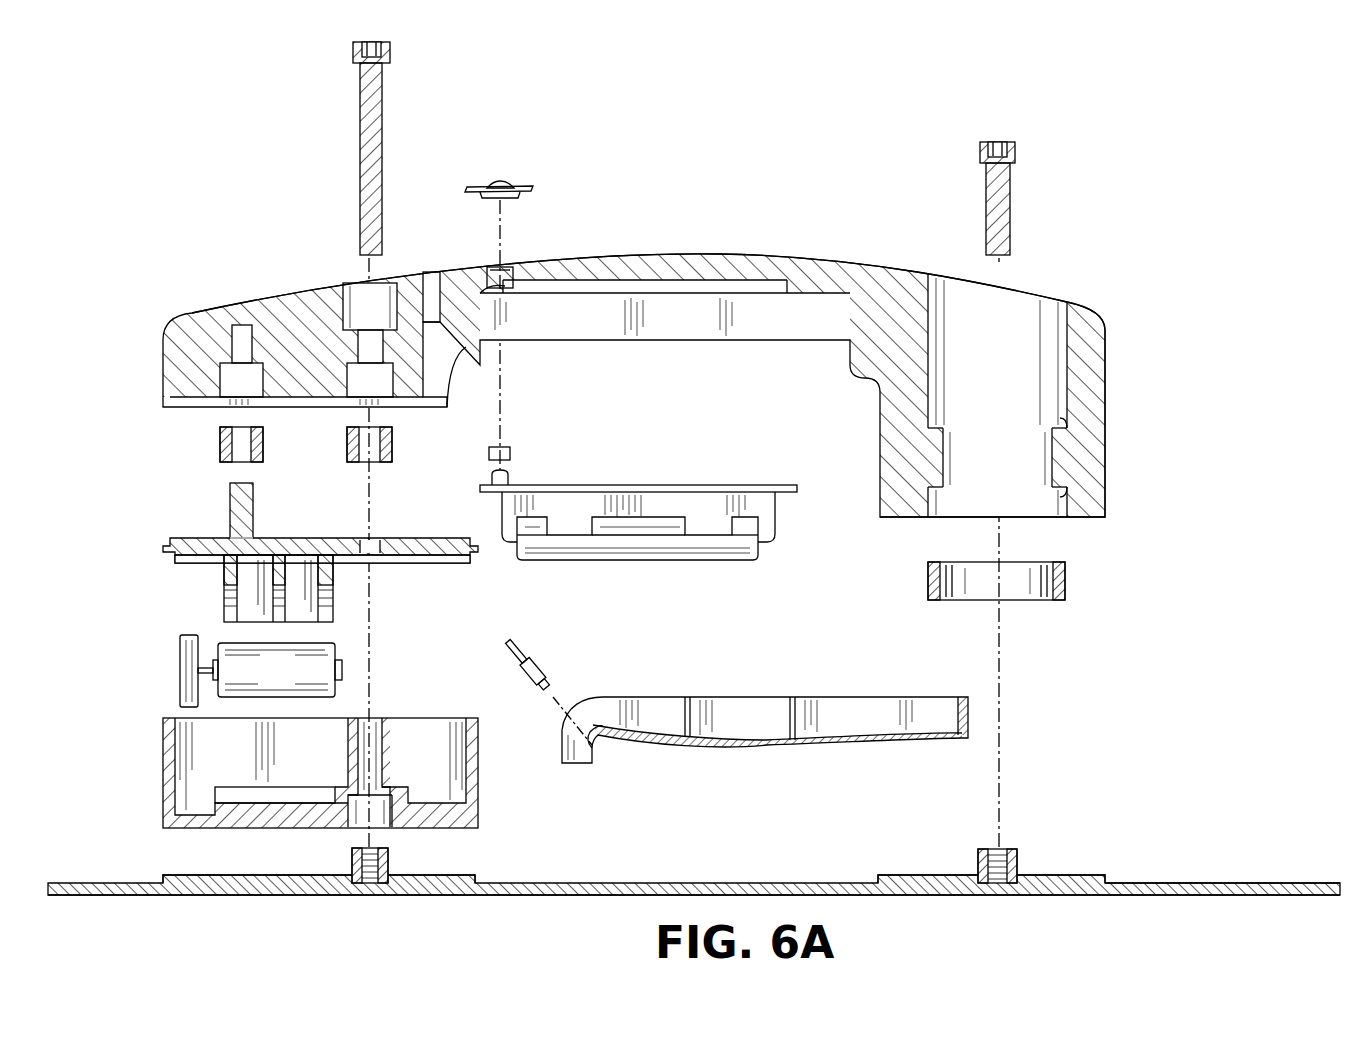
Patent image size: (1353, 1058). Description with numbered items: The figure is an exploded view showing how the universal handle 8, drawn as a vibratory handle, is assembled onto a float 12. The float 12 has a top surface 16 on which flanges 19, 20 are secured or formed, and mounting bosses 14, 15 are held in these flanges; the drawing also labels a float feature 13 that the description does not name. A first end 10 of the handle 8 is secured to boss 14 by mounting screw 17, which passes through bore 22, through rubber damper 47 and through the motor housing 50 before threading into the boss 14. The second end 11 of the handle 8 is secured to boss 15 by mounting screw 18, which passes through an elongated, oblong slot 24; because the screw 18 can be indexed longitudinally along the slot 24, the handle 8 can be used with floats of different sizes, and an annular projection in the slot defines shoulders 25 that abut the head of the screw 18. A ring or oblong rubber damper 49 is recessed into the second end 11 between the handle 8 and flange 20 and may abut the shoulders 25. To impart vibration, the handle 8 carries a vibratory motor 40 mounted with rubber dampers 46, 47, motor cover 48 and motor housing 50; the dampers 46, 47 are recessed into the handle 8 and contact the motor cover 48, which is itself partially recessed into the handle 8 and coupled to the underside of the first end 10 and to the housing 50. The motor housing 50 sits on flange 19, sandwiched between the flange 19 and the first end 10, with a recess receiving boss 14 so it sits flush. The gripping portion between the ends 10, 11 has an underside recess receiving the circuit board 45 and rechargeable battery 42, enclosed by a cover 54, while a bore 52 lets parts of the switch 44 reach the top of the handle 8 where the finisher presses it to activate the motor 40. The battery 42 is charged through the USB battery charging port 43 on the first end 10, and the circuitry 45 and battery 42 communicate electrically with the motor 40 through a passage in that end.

The universal handle 8 is at (639, 226).
The first end 10 is at (165, 300).
The second end 11 is at (1104, 300).
The float 12 is at (1302, 883).
The bottom surface of base plate 13 is at (1168, 897).
The mounting boss 14 is at (352, 860).
The mounting boss 15 is at (1017, 862).
The top surface 16 is at (1220, 882).
The mounting screw 17 is at (360, 158).
The mounting screw 18 is at (986, 195).
The flange 19 is at (478, 877).
The flange 20 is at (1108, 878).
The bore 22 is at (352, 283).
The elongated slot 24 is at (1060, 300).
The shoulders 25 is at (1062, 421).
The vibratory motor 40 is at (298, 678).
The rechargeable battery 42 is at (655, 561).
The USB battery charging port 43 is at (537, 692).
The switch 44 is at (500, 181).
The circuit board 45 is at (661, 485).
The rubber damper 46 is at (220, 446).
The rubber damper 47 is at (347, 446).
The motor cover 48 is at (183, 538).
The rubber damper 49 is at (928, 580).
The motor housing 50 is at (163, 748).
The bore 52 is at (510, 267).
The cover 54 is at (755, 748).